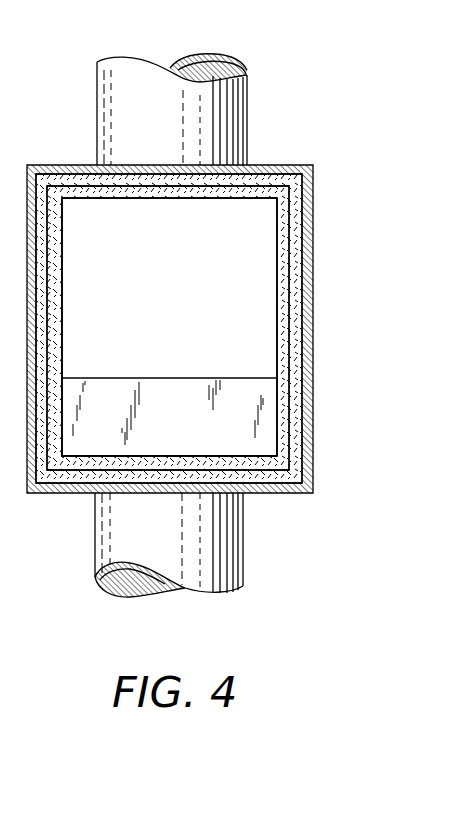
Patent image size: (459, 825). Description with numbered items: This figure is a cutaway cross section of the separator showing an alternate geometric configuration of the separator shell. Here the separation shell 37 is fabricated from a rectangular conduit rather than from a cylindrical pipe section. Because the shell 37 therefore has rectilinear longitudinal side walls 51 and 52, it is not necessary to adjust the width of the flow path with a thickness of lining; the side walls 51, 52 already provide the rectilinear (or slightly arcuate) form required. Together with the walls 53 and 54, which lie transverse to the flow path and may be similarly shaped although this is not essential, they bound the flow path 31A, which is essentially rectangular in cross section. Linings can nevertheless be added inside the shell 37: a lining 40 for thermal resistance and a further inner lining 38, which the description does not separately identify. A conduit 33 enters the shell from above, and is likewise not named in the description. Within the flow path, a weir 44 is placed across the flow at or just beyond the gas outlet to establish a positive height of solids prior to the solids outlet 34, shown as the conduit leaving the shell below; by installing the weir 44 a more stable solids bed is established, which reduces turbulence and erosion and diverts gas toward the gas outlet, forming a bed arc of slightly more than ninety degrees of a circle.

The inlet tube 33 is at (98, 80).
The solids outlet 34 is at (110, 542).
The separation shell 37 is at (312, 174).
The lining 40 is at (300, 204).
The inner lining 38 is at (292, 243).
The flow path 31A is at (187, 287).
The longitudinal side wall 51 is at (63, 297).
The longitudinal side wall 52 is at (277, 303).
The transverse wall 53 is at (158, 199).
The transverse wall 54 is at (173, 456).
The weir 44 is at (168, 378).